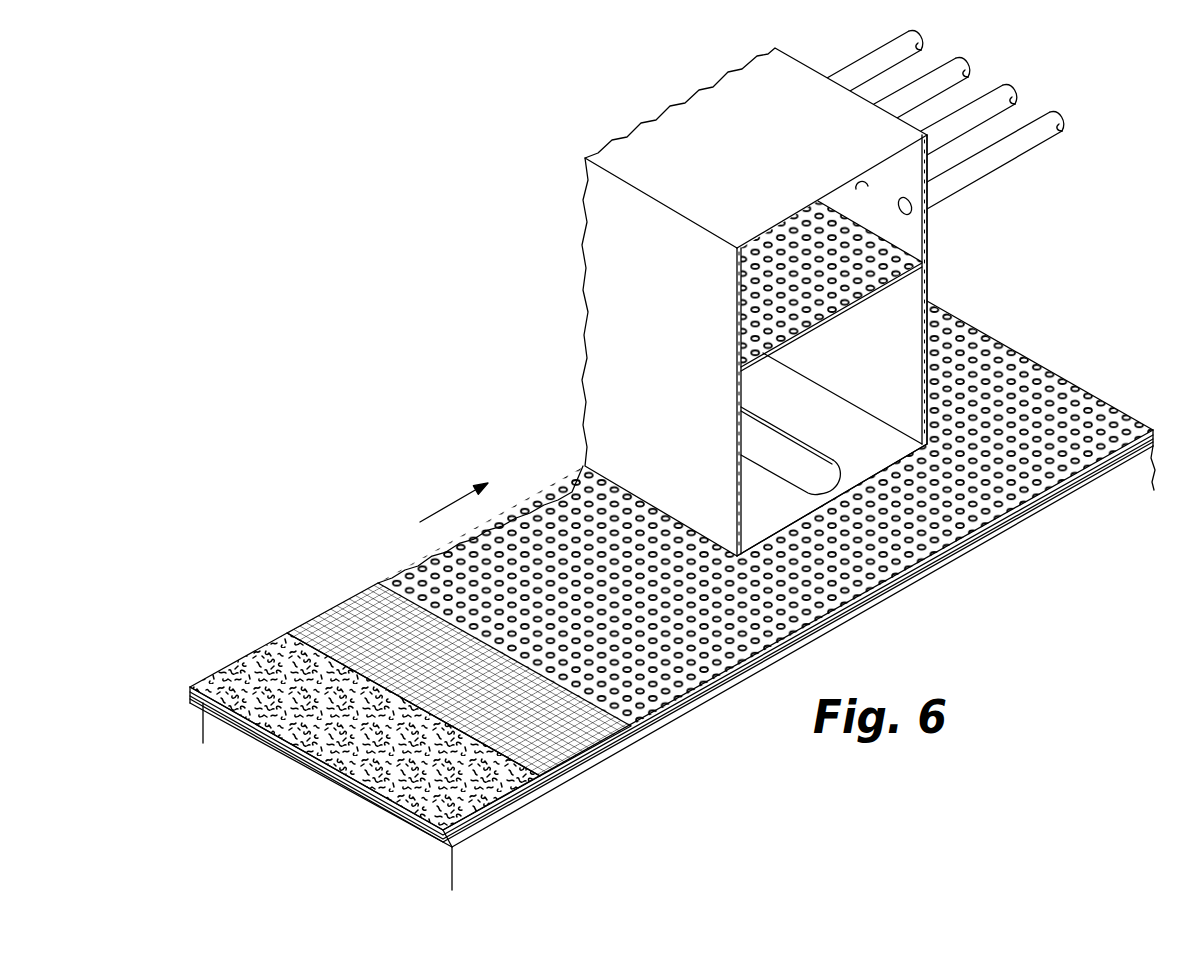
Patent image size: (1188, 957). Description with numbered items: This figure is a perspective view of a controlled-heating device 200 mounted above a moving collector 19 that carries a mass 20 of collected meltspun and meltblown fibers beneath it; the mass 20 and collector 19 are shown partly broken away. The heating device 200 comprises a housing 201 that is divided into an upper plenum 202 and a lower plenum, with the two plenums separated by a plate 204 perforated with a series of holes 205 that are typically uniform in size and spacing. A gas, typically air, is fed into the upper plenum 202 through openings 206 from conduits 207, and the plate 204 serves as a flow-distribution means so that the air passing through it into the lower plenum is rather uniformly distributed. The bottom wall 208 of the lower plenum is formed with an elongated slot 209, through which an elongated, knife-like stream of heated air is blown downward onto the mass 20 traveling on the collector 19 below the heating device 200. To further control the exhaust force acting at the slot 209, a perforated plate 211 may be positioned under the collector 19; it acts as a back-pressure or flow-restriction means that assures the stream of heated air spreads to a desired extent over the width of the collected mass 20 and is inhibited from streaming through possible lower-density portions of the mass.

The moving collector 19 is at (362, 592).
The mass of collected meltspun and meltblown fibers 20 is at (277, 636).
The controlled-heating device 200 is at (805, 293).
The housing 201 is at (691, 104).
The upper plenum 202 is at (920, 237).
The plate 204 is at (892, 281).
The holes 205 is at (852, 301).
The openings 206 is at (912, 213).
The conduits 207 is at (1033, 120).
The bottom wall 208 is at (883, 455).
The elongated slot 209 is at (787, 446).
The perforated plate 211 is at (1135, 425).